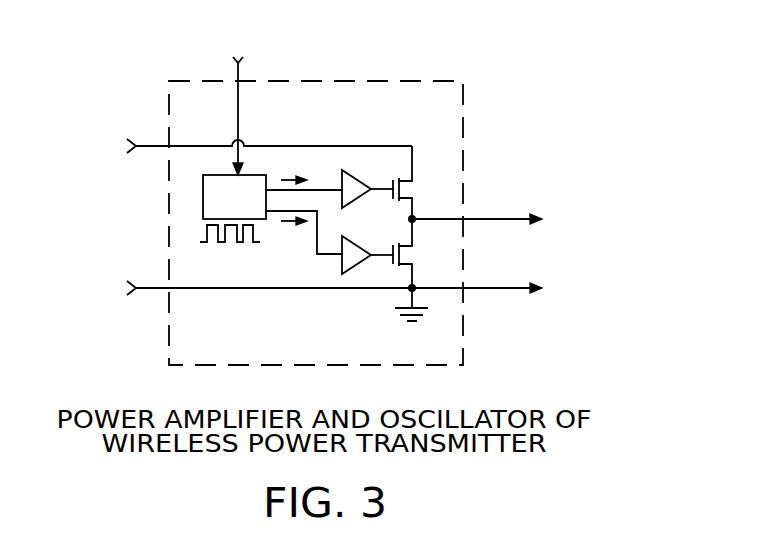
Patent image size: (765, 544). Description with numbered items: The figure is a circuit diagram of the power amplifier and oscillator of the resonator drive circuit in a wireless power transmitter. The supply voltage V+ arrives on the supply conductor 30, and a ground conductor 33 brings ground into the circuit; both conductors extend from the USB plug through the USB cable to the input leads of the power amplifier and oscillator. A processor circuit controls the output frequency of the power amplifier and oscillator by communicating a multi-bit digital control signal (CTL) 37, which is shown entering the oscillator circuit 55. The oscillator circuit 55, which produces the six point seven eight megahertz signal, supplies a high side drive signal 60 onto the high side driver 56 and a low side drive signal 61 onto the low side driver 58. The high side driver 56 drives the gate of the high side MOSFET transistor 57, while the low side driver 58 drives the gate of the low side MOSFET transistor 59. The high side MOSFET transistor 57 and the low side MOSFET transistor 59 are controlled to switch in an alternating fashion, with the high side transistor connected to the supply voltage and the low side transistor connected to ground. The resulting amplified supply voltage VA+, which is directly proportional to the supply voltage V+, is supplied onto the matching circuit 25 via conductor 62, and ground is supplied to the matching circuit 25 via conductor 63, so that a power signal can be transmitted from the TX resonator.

The matching circuit 25 is at (603, 253).
The supply conductor 30 is at (143, 145).
The ground conductor 33 is at (144, 286).
The multi-bit digital control signal (CTL) 37 is at (238, 100).
The oscillator circuit 55 is at (225, 222).
The high side driver 56 is at (359, 180).
The high side MOSFET transistor 57 is at (407, 187).
The low side driver 58 is at (366, 264).
The low side MOSFET transistor 59 is at (407, 255).
The high side drive signal 60 is at (285, 180).
The low side drive signal 61 is at (288, 222).
The conductor 62 is at (509, 220).
The conductor 63 is at (511, 289).